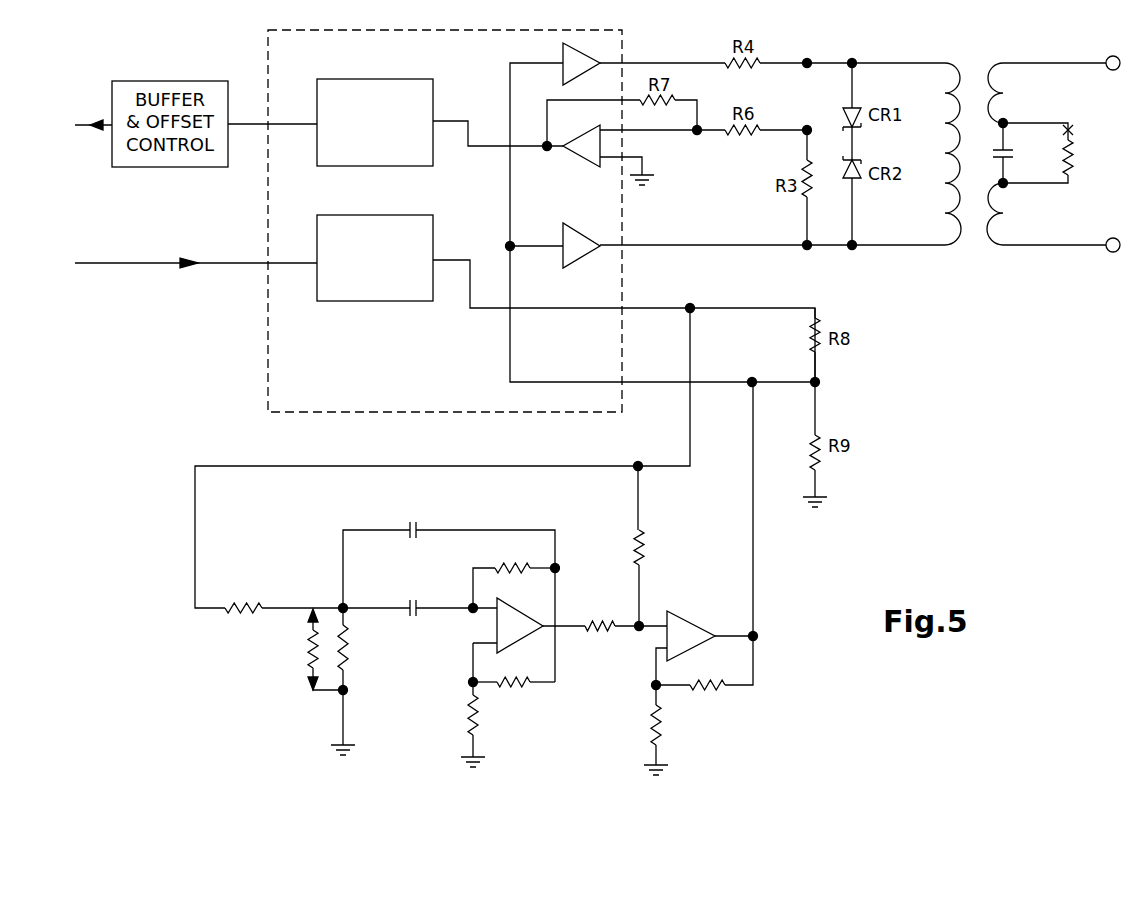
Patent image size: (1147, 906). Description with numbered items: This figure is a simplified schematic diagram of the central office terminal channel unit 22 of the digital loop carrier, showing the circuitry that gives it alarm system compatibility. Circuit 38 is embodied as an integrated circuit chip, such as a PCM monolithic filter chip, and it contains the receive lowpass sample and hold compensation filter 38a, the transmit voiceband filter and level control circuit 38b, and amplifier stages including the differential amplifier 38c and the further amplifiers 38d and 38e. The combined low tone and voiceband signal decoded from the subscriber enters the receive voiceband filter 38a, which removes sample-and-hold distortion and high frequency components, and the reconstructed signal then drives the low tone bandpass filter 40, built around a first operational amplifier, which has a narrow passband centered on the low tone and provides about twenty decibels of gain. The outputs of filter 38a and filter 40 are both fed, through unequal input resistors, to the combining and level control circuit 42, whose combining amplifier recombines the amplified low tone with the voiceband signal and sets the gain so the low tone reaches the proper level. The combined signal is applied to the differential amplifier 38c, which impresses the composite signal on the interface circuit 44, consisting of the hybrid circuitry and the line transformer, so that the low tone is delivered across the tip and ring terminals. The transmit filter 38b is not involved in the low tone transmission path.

The central office terminal (COT) channel unit 22 is at (1004, 440).
The filter circuit 38 is at (268, 195).
The receive voiceband filter circuit 38a is at (352, 222).
The transmit voiceband filter and level control circuit 38b is at (350, 85).
The differential amplifier 38c is at (578, 52).
The summing amplifier 38d is at (582, 148).
The inverting amplifier 38e is at (577, 253).
The low frequency narrowband filter and level control circuit 40 is at (301, 523).
The combining and level control circuit 42 is at (722, 514).
The interface circuit 44 is at (986, 268).